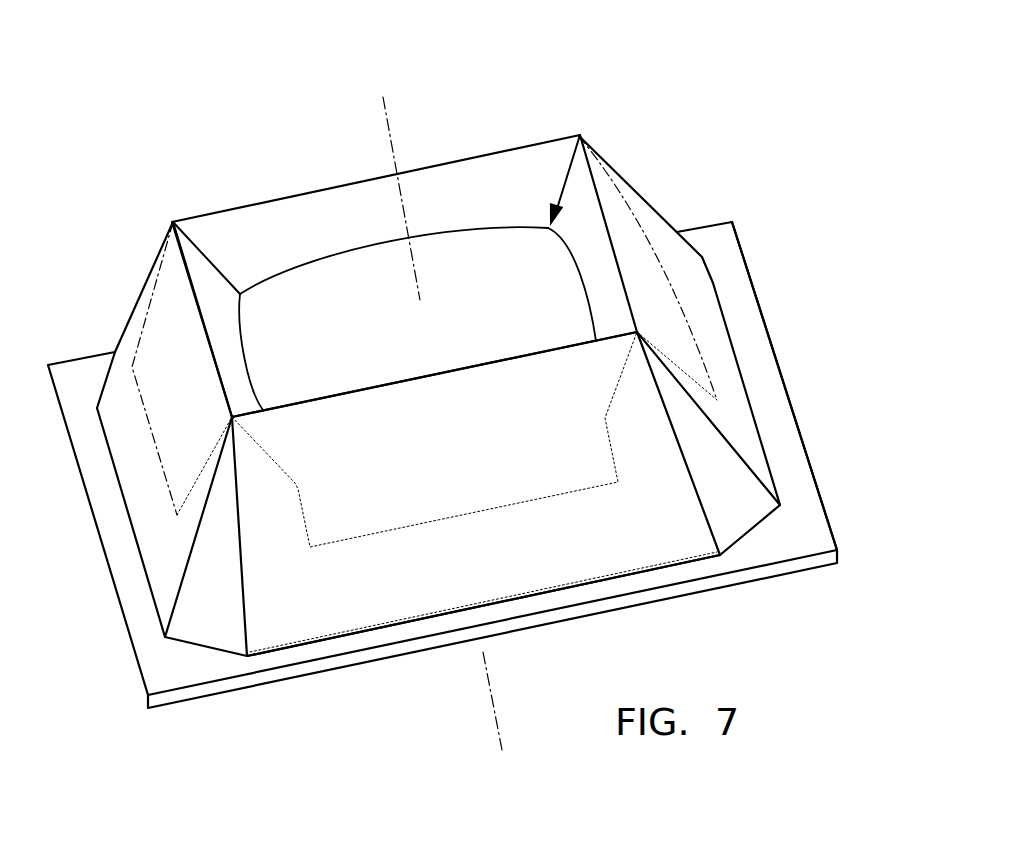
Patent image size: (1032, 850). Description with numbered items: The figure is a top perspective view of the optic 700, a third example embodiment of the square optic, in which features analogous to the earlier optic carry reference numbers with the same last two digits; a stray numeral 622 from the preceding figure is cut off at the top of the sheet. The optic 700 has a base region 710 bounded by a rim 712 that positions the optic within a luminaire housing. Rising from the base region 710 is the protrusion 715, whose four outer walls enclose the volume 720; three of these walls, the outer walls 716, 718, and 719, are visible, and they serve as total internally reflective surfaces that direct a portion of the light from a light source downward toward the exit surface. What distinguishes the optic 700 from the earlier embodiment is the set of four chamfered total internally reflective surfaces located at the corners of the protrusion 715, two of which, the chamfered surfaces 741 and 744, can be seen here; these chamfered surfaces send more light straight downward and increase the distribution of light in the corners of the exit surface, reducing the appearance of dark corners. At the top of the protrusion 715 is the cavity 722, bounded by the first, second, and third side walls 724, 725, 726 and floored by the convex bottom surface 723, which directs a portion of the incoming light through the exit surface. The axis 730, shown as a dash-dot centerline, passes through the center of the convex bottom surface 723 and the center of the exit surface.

The reference from preceding figure 622 is at (374, 7).
The optic 700 is at (655, 65).
The base region 710 is at (850, 505).
The rim 712 is at (785, 400).
The protrusion 715 is at (688, 183).
The outer wall 716 is at (623, 203).
The outer wall 718 is at (127, 437).
The outer wall 719 is at (285, 590).
The volume 720 is at (476, 471).
The cavity 722 is at (580, 135).
The convex bottom surface 723 is at (484, 319).
The first side wall 724 is at (592, 263).
The second side wall 725 is at (370, 231).
The third side wall 726 is at (212, 287).
The axis 730 is at (387, 110).
The chamfered total internally reflective surface 741 is at (737, 512).
The chamfered total internally reflective surface 744 is at (193, 590).